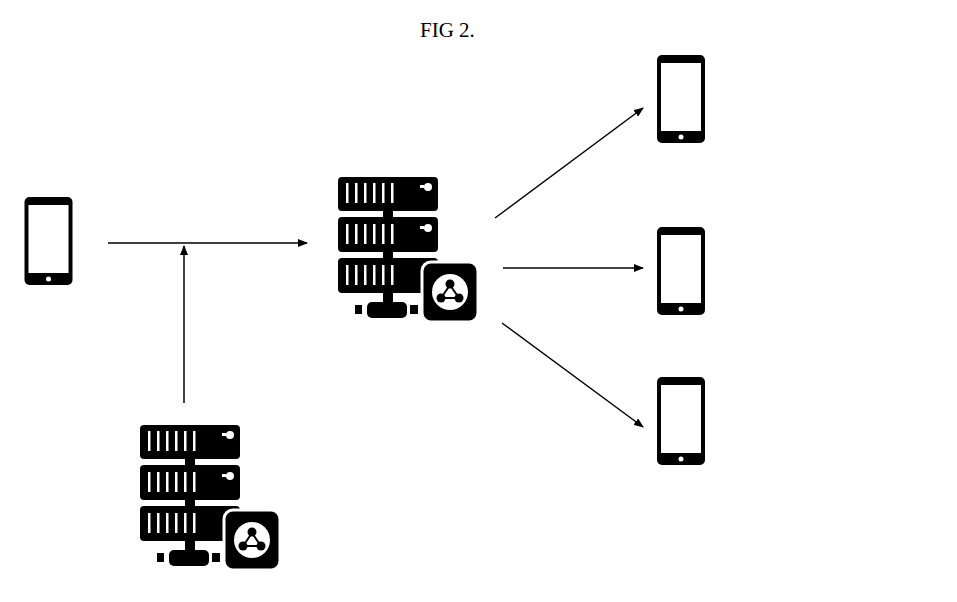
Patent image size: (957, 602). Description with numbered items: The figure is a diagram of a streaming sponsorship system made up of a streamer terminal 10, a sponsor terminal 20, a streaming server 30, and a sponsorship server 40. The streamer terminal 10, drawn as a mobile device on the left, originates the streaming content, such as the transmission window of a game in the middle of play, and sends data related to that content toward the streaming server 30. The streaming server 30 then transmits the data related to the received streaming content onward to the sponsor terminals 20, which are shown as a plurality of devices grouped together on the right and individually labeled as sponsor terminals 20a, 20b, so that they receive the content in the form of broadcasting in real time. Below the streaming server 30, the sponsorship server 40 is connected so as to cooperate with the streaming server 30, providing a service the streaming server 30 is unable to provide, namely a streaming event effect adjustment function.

The streamer terminal 10 is at (73, 173).
The sponsor terminal 20 is at (778, 260).
The sponsor terminal 20a is at (717, 82).
The sponsor terminal 20b is at (717, 270).
The streaming server 30 is at (418, 162).
The sponsorship server 40 is at (288, 503).